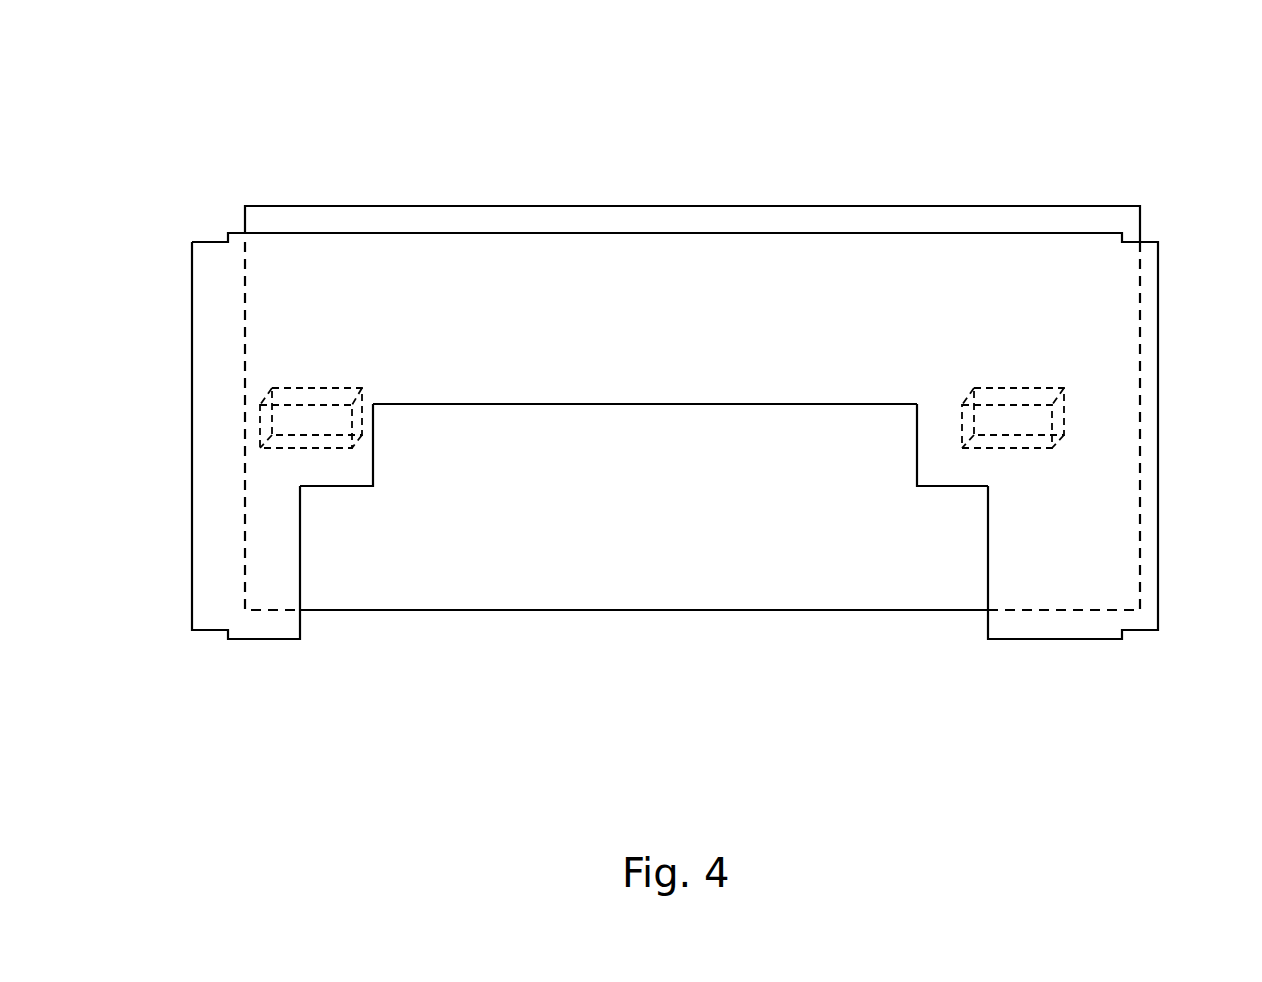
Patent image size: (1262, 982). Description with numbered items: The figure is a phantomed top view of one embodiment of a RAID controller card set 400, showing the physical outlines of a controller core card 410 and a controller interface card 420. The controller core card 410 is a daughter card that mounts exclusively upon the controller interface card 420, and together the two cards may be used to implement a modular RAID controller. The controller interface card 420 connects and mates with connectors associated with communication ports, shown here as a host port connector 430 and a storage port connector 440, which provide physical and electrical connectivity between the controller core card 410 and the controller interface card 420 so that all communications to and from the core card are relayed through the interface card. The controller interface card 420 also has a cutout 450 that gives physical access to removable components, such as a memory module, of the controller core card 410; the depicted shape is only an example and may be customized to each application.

The RAID controller card set 400 is at (168, 82).
The controller core card 410 is at (693, 206).
The controller interface card 420 is at (192, 420).
The host port connector 430 is at (318, 386).
The storage port connector 440 is at (1018, 386).
The cutout 450 is at (318, 497).